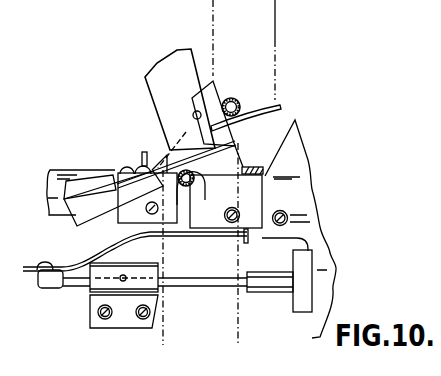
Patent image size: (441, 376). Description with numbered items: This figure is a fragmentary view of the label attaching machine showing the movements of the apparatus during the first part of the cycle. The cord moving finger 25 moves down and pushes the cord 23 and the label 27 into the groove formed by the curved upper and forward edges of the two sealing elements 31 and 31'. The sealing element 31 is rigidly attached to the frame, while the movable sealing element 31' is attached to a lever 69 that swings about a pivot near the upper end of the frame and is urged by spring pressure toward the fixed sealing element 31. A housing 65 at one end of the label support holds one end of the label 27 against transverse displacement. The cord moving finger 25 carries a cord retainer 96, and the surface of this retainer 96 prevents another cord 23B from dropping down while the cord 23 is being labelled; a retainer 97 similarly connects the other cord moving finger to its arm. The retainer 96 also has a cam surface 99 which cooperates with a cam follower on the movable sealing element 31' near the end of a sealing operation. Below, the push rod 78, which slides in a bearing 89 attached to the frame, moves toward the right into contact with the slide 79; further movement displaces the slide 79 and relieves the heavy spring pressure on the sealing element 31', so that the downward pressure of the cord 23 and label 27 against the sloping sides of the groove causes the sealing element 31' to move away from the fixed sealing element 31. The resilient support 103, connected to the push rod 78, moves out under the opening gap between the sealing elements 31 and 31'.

The cord retainer 96 is at (197, 55).
The retainer 97 is at (217, 78).
The cam surface 99 is at (193, 115).
The another cord 23B is at (234, 97).
The cord moving finger 25 is at (233, 144).
The housing 65 is at (243, 168).
The lever 69 is at (298, 150).
The movable sealing element 31' is at (296, 223).
The cord 23 is at (201, 177).
The label 27 is at (186, 203).
The fixed sealing element 31 is at (112, 198).
The resilient support 103 is at (227, 240).
The push rod 78 is at (80, 288).
The slide 79 is at (277, 289).
The bearing 89 is at (132, 293).